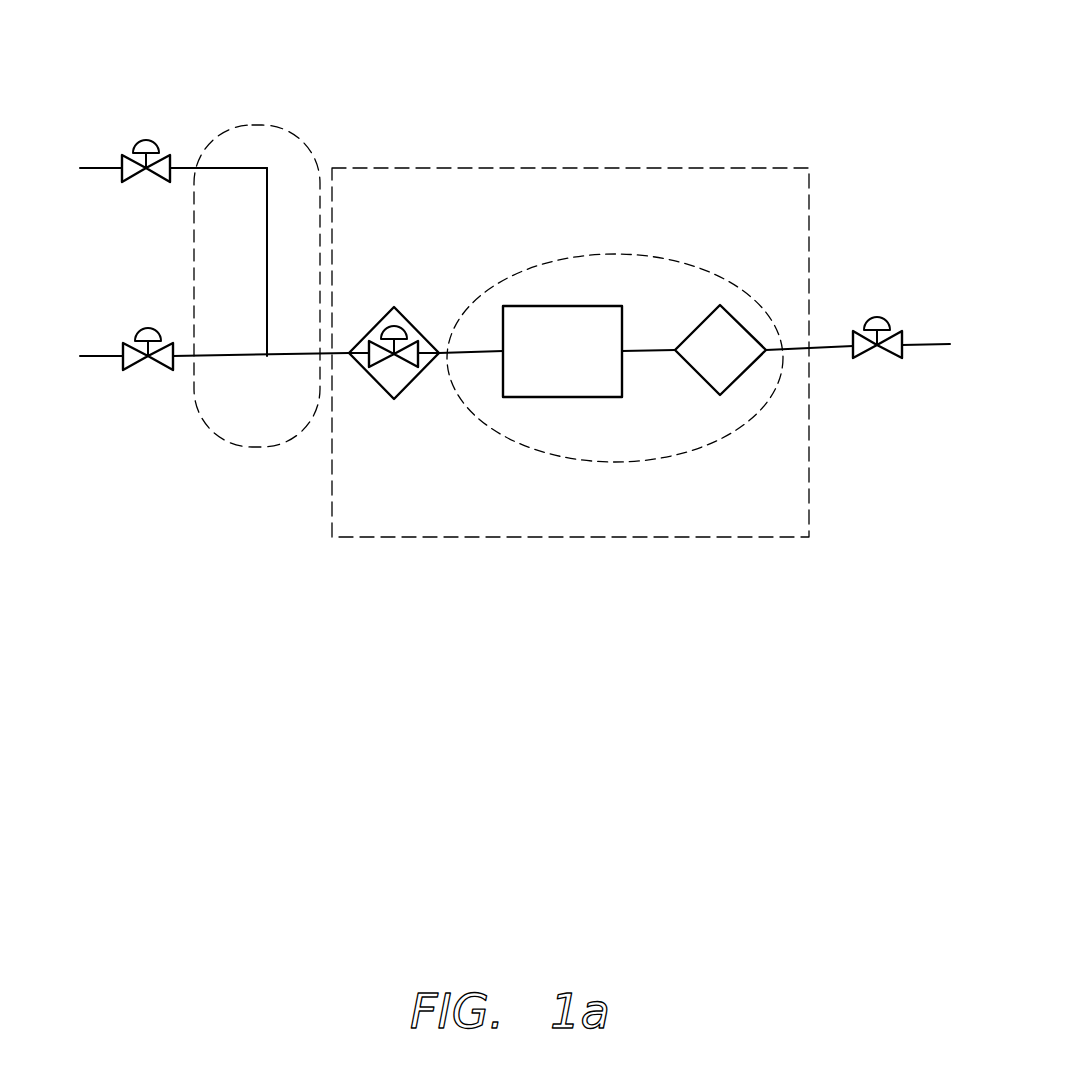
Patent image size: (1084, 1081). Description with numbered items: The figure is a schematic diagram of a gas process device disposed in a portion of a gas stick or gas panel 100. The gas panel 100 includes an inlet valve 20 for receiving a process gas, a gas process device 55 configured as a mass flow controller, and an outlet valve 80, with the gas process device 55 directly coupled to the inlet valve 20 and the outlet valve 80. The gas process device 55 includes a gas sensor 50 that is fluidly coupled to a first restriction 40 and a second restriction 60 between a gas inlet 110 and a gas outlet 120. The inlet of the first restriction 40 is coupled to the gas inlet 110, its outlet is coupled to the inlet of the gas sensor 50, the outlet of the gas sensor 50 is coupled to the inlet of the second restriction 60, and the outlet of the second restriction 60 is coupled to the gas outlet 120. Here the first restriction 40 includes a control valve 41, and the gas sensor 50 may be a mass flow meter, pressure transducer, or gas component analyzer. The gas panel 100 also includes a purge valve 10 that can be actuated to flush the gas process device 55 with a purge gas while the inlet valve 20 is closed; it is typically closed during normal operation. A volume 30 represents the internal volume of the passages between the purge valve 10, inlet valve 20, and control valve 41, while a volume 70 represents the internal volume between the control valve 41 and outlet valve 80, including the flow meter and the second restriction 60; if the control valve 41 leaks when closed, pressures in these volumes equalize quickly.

The gas panel 100 is at (518, 66).
The purge valve 10 is at (150, 140).
The inlet valve 20 is at (148, 328).
The volume 30 is at (275, 132).
The gas inlet 110 is at (308, 356).
The gas process device 55 is at (562, 167).
The first restriction 40 is at (372, 333).
The control valve 41 is at (396, 325).
The gas sensor 50 is at (550, 397).
The second restriction 60 is at (697, 325).
The volume 70 is at (650, 255).
The outlet valve 80 is at (878, 316).
The gas outlet 120 is at (817, 347).